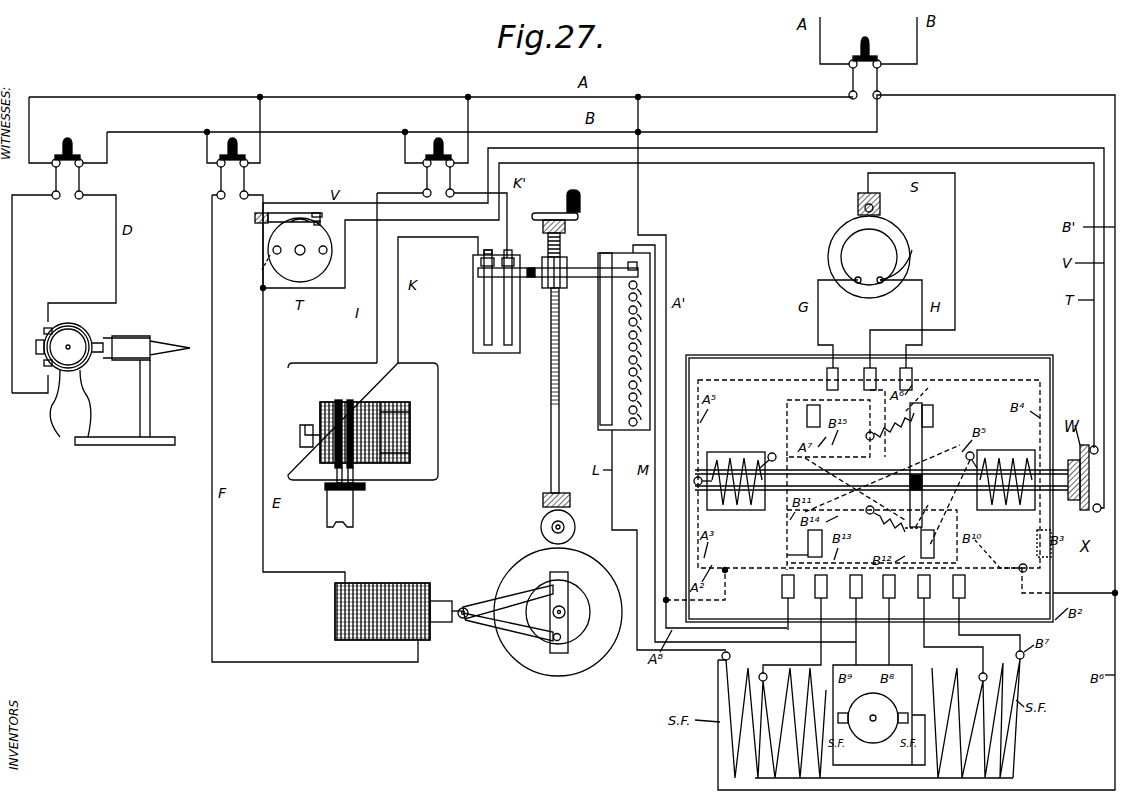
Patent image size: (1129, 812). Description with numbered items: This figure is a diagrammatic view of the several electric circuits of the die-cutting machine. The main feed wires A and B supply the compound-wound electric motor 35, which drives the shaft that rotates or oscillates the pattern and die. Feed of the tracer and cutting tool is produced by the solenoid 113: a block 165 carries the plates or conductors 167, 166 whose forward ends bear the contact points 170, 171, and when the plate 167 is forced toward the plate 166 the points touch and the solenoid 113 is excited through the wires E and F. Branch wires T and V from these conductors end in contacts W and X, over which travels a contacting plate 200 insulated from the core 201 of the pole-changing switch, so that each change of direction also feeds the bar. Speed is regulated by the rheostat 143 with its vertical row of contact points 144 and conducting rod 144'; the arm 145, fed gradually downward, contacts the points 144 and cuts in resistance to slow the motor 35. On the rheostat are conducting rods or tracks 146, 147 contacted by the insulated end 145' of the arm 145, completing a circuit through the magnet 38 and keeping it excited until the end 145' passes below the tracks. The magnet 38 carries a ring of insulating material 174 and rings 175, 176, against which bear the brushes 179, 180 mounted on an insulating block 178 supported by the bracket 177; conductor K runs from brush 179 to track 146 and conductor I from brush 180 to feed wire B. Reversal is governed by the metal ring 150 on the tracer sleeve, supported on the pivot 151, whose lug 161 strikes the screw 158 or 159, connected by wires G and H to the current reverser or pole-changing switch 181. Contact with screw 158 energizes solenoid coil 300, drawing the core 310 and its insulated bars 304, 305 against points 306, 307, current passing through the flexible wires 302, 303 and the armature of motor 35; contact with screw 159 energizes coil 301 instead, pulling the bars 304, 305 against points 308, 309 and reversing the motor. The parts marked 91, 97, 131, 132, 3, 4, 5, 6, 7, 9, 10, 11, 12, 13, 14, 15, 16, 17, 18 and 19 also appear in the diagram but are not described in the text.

The motor 91 is at (80, 330).
The solenoid 113 is at (382, 642).
The wheel 131 is at (540, 542).
The pulley 132 is at (541, 523).
The screw shaft 97 is at (551, 433).
The rheostat 143 is at (616, 256).
The contact points 144 is at (632, 343).
The conducting rod 144' is at (591, 339).
The arm 145 is at (558, 252).
The insulated end of arm 145' is at (490, 240).
The conducting rod or track 146 is at (484, 315).
The conducting rod or track 147 is at (512, 325).
The metal ring 150 is at (831, 240).
The post or pivot 151 is at (857, 198).
The screw 158 is at (840, 264).
The screw 159 is at (900, 272).
The lug or projection 161 is at (868, 277).
The block 165 is at (257, 222).
The plate or conductor 166 is at (292, 212).
The conducting plate 167 is at (258, 262).
The contact point 170 is at (322, 224).
The contact point 171 is at (326, 212).
The ring of insulating material 174 is at (338, 400).
The ring 175 is at (352, 402).
The ring 176 is at (338, 424).
The bracket 177 is at (327, 520).
The block of insulating material 178 is at (366, 488).
The contact or brush 179 is at (355, 473).
The contact or brush 180 is at (337, 474).
The magnet 38 is at (390, 403).
The terminal 3 is at (808, 543).
The terminal 4 is at (933, 544).
The terminal 5 is at (772, 452).
The terminal 6 is at (975, 454).
The terminal 7 is at (694, 482).
The contact 9 is at (865, 438).
The contact 10 is at (866, 512).
The terminal 11 is at (841, 364).
The terminal 12 is at (878, 363).
The terminal 13 is at (922, 363).
The terminal 14 is at (778, 602).
The terminal 15 is at (793, 628).
The terminal 16 is at (847, 620).
The terminal 17 is at (881, 620).
The terminal 18 is at (945, 628).
The terminal 19 is at (981, 617).
The electric motor 35 is at (872, 743).
The pole-changing switch 181 is at (1055, 590).
The contacting plate 200 is at (1088, 512).
The core of pole-changing switch 201 is at (922, 475).
The solenoid coil 300 is at (1006, 489).
The solenoid coil 301 is at (735, 448).
The flexible wire 302 is at (927, 388).
The flexible wire 303 is at (905, 532).
The insulated bar 304 is at (922, 408).
The insulated bar 305 is at (960, 556).
The contact point 306 is at (933, 414).
The contact point 307 is at (937, 513).
The contact point 308 is at (787, 554).
The contact point 309 is at (807, 410).
The core 310 is at (881, 480).